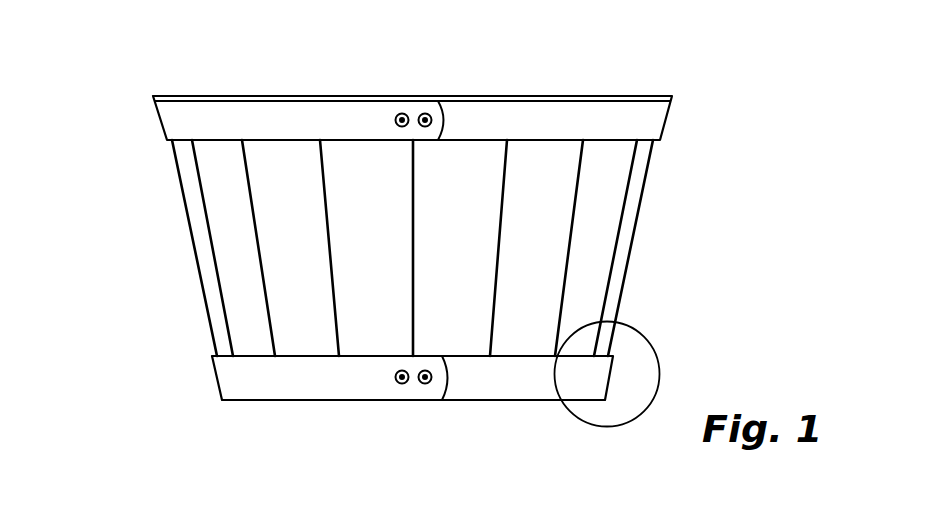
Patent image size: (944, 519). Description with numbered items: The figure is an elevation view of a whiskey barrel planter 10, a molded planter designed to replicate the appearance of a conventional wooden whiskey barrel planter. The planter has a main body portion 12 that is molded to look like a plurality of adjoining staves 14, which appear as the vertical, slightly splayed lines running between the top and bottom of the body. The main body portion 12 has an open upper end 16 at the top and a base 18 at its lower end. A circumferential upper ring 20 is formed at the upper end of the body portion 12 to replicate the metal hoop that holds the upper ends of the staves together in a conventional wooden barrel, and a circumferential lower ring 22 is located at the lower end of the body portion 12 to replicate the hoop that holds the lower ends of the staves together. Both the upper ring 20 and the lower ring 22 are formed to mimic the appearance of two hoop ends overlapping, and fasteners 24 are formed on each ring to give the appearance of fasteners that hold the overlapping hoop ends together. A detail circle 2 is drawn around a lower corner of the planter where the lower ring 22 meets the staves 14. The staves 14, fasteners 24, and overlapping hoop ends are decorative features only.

The whiskey barrel planter 10 is at (704, 76).
The main body portion 12 is at (646, 283).
The staves 14 is at (228, 230).
The open upper end 16 is at (268, 76).
The base 18 is at (342, 400).
The circumferential upper ring 20 is at (667, 123).
The circumferential lower ring 22 is at (215, 378).
The fasteners 24 is at (424, 113).
The detail region 2 is at (658, 360).